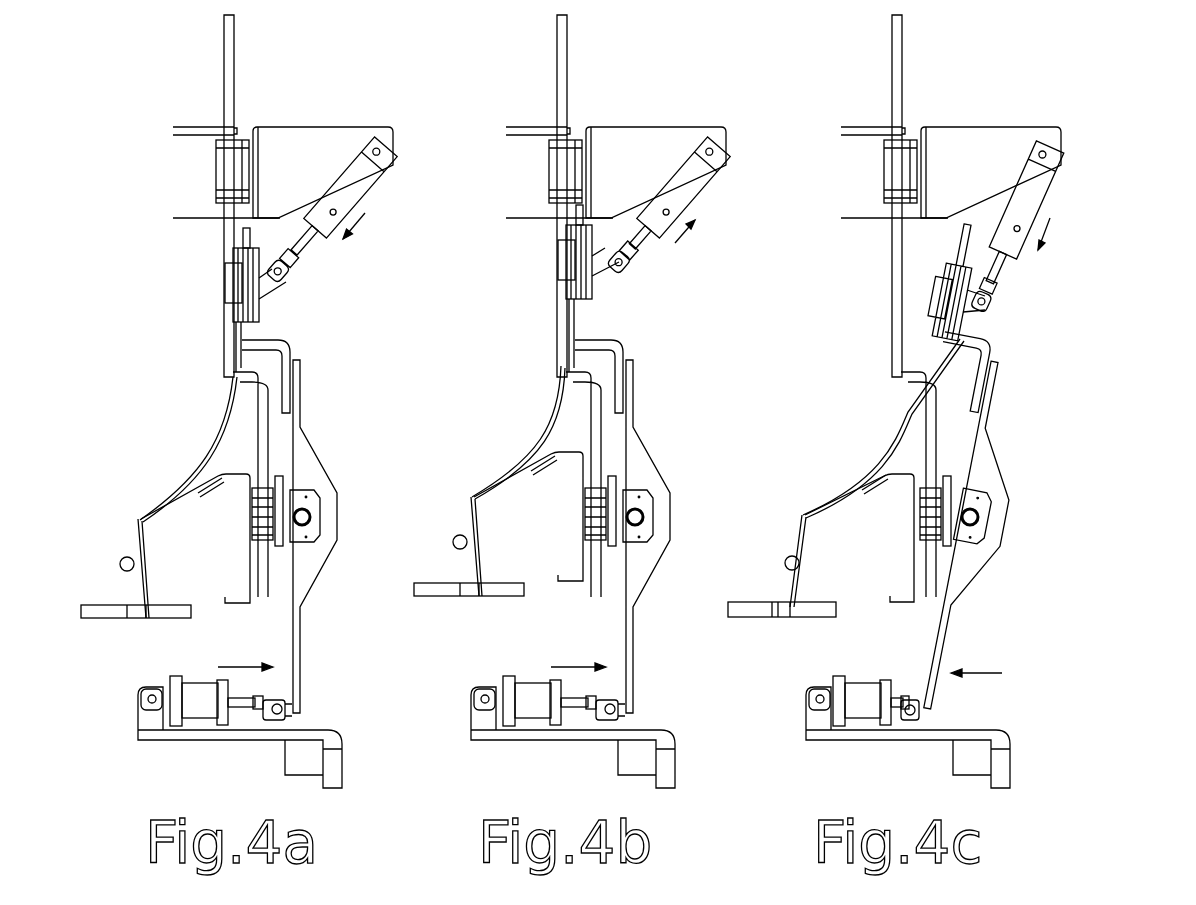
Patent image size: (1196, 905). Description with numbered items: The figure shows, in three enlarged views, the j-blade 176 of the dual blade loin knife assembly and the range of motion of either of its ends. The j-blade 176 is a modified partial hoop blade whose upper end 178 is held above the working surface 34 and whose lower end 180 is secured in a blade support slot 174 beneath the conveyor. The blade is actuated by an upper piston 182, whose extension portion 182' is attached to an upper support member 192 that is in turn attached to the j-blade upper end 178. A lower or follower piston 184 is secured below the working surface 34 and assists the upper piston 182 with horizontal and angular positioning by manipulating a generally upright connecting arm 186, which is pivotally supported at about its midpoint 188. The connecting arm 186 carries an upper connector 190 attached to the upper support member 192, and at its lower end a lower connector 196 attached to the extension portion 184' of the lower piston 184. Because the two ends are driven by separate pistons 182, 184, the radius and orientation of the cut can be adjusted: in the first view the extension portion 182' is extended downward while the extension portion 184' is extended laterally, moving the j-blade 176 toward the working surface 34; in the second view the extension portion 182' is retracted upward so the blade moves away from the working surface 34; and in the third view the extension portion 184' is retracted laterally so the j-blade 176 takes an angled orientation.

In FIG. 4A, the working surface 34 is at (167, 508).
In FIG. 4B, the working surface 34 is at (529, 503).
In FIG. 4C, the working surface 34 is at (858, 512).
In FIG. 4A, the blade support slot 174 is at (128, 605).
In FIG. 4B, the blade support slot 174 is at (454, 564).
In FIG. 4C, the blade support slot 174 is at (768, 583).
In FIG. 4A, the j-blade 176 is at (215, 447).
In FIG. 4B, the j-blade 176 is at (518, 432).
In FIG. 4C, the j-blade 176 is at (883, 428).
In FIG. 4A, the upper end of the j-blade 178 is at (233, 357).
In FIG. 4B, the upper end of the j-blade 178 is at (534, 448).
In FIG. 4C, the upper end of the j-blade 178 is at (883, 457).
In FIG. 4A, the lower end of the j-blade 180 is at (141, 517).
In FIG. 4B, the lower end of the j-blade 180 is at (494, 515).
In FIG. 4C, the lower end of the j-blade 180 is at (832, 530).
In FIG. 4A, the upper piston 182 is at (374, 188).
In FIG. 4B, the upper piston 182 is at (707, 190).
In FIG. 4C, the upper piston 182 is at (1076, 200).
In FIG. 4A, the extension portion of upper piston 182' is at (324, 264).
In FIG. 4B, the extension portion of upper piston 182' is at (657, 264).
In FIG. 4C, the extension portion of upper piston 182' is at (1023, 295).
In FIG. 4A, the lower piston 184 is at (221, 671).
In FIG. 4B, the lower piston 184 is at (554, 671).
In FIG. 4C, the lower piston 184 is at (917, 672).
In FIG. 4A, the extension portion of lower piston 184' is at (232, 739).
In FIG. 4B, the extension portion of lower piston 184' is at (565, 739).
In FIG. 4C, the extension portion of lower piston 184' is at (869, 736).
In FIG. 4A, the connecting arm 186 is at (297, 643).
In FIG. 4B, the connecting arm 186 is at (676, 536).
In FIG. 4C, the connecting arm 186 is at (979, 535).
In FIG. 4A, the midpoint 188 is at (310, 517).
In FIG. 4B, the midpoint 188 is at (689, 513).
In FIG. 4C, the midpoint 188 is at (1019, 514).
In FIG. 4A, the upper connector 190 is at (291, 372).
In FIG. 4B, the upper connector 190 is at (648, 370).
In FIG. 4C, the upper connector 190 is at (1006, 372).
In FIG. 4A, the upper support member 192 is at (233, 284).
In FIG. 4B, the upper support member 192 is at (535, 252).
In FIG. 4C, the upper support member 192 is at (908, 282).
In FIG. 4A, the lower connector 196 is at (290, 712).
In FIG. 4B, the lower connector 196 is at (661, 706).
In FIG. 4C, the lower connector 196 is at (962, 704).